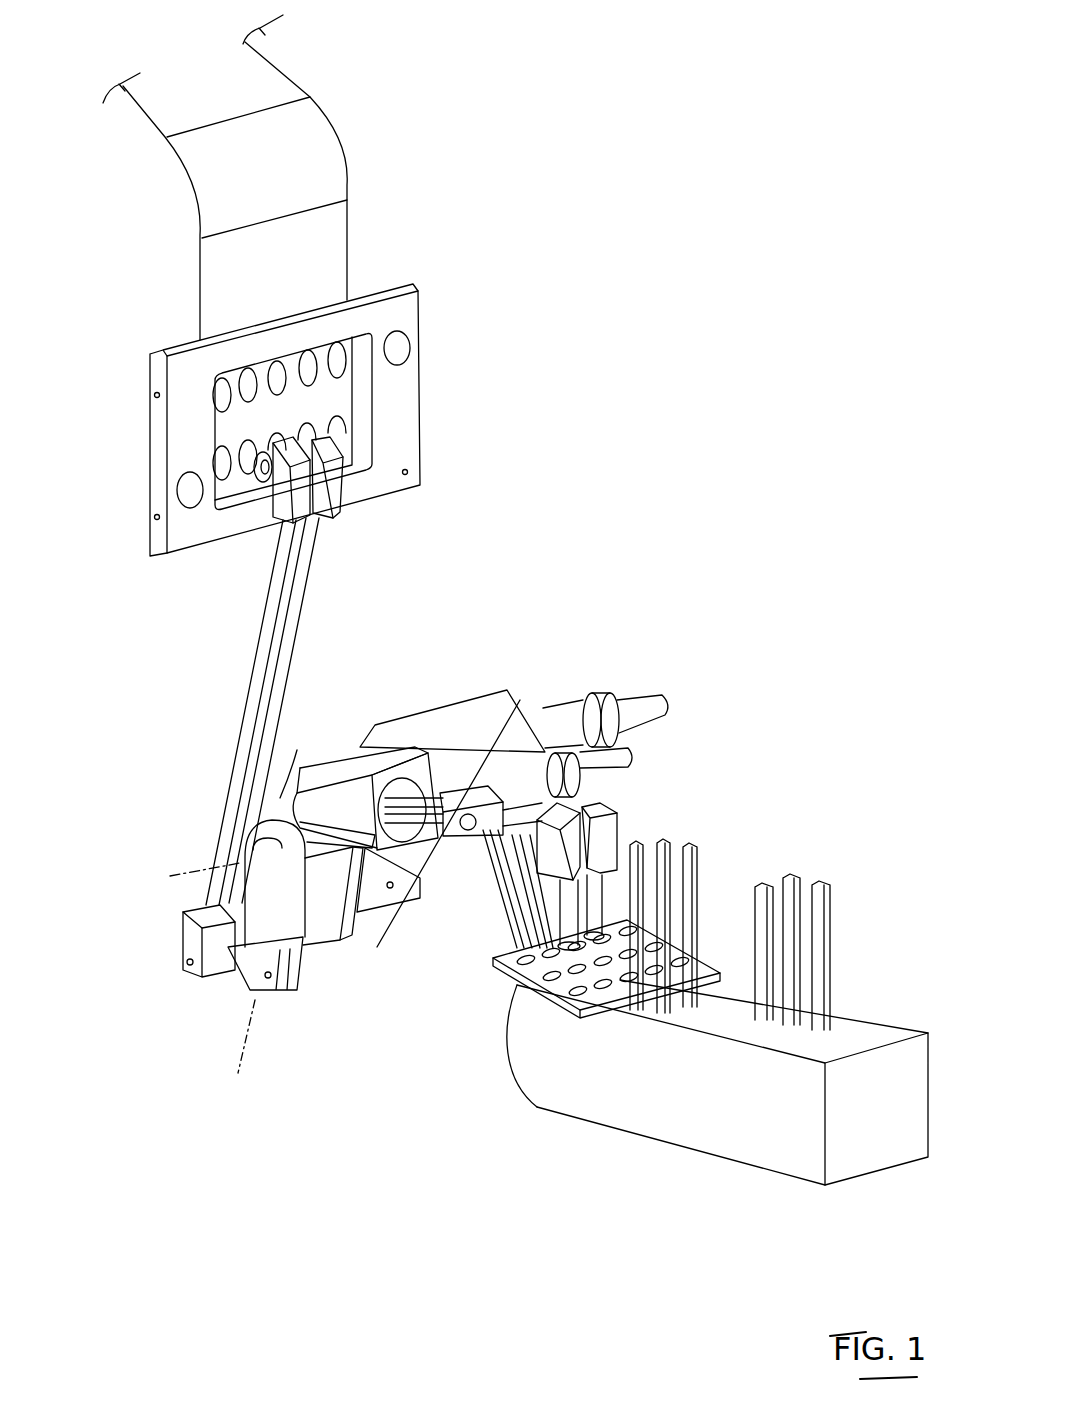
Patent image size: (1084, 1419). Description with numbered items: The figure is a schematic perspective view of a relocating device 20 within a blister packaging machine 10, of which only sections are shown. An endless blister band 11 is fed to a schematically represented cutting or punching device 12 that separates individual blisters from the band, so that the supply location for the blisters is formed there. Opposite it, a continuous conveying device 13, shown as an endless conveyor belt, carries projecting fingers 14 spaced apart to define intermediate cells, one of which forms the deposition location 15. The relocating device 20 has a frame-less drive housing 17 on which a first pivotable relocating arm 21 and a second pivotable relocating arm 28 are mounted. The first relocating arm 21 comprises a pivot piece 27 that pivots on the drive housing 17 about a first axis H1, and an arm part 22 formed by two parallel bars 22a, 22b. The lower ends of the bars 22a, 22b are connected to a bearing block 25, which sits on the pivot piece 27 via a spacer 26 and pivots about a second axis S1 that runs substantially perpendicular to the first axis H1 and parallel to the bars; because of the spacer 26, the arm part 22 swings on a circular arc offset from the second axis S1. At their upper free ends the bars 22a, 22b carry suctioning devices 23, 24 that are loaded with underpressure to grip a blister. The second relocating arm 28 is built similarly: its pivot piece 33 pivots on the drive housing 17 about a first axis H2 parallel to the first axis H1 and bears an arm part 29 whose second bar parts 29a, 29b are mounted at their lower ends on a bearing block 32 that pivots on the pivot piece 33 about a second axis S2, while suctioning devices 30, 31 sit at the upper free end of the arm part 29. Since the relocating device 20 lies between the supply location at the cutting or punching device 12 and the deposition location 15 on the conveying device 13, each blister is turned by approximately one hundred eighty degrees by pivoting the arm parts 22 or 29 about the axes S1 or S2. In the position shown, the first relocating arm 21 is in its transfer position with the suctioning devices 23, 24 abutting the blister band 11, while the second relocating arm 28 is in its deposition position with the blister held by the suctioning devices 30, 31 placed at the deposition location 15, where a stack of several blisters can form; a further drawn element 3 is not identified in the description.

The sample carrier 3 is at (558, 965).
The blister packaging machine 10 is at (838, 348).
The endless blister band 11 is at (313, 133).
The cutting or punching device 12 is at (442, 348).
The continuous conveying device 13 is at (722, 1126).
The projecting fingers 14 is at (763, 995).
The deposition location 15 is at (612, 887).
The frame-less drive housing 17 is at (497, 715).
The relocating device 20 is at (133, 1113).
The first pivotable relocating arm 21 is at (235, 741).
The arm part 22 is at (273, 711).
The bar part 22a is at (265, 612).
The bar part 22b is at (279, 655).
The suctioning device 23 is at (268, 497).
The suctioning device 24 is at (343, 424).
The bearing block 25 is at (193, 940).
The spacer 26 is at (242, 958).
The pivot piece 27 is at (315, 925).
The second pivotable relocating arm 28 is at (470, 782).
The arm part 29 is at (583, 787).
The second bar part 29a is at (475, 832).
The second bar part 29b is at (518, 809).
The suctioning device 30 is at (567, 907).
The suctioning device 31 is at (520, 990).
The bearing block 32 is at (440, 795).
The pivot piece 33 is at (337, 780).
The first axis H1 is at (176, 877).
The first axis H2 is at (303, 765).
The second axis S1 is at (253, 1032).
The second axis S2 is at (442, 842).